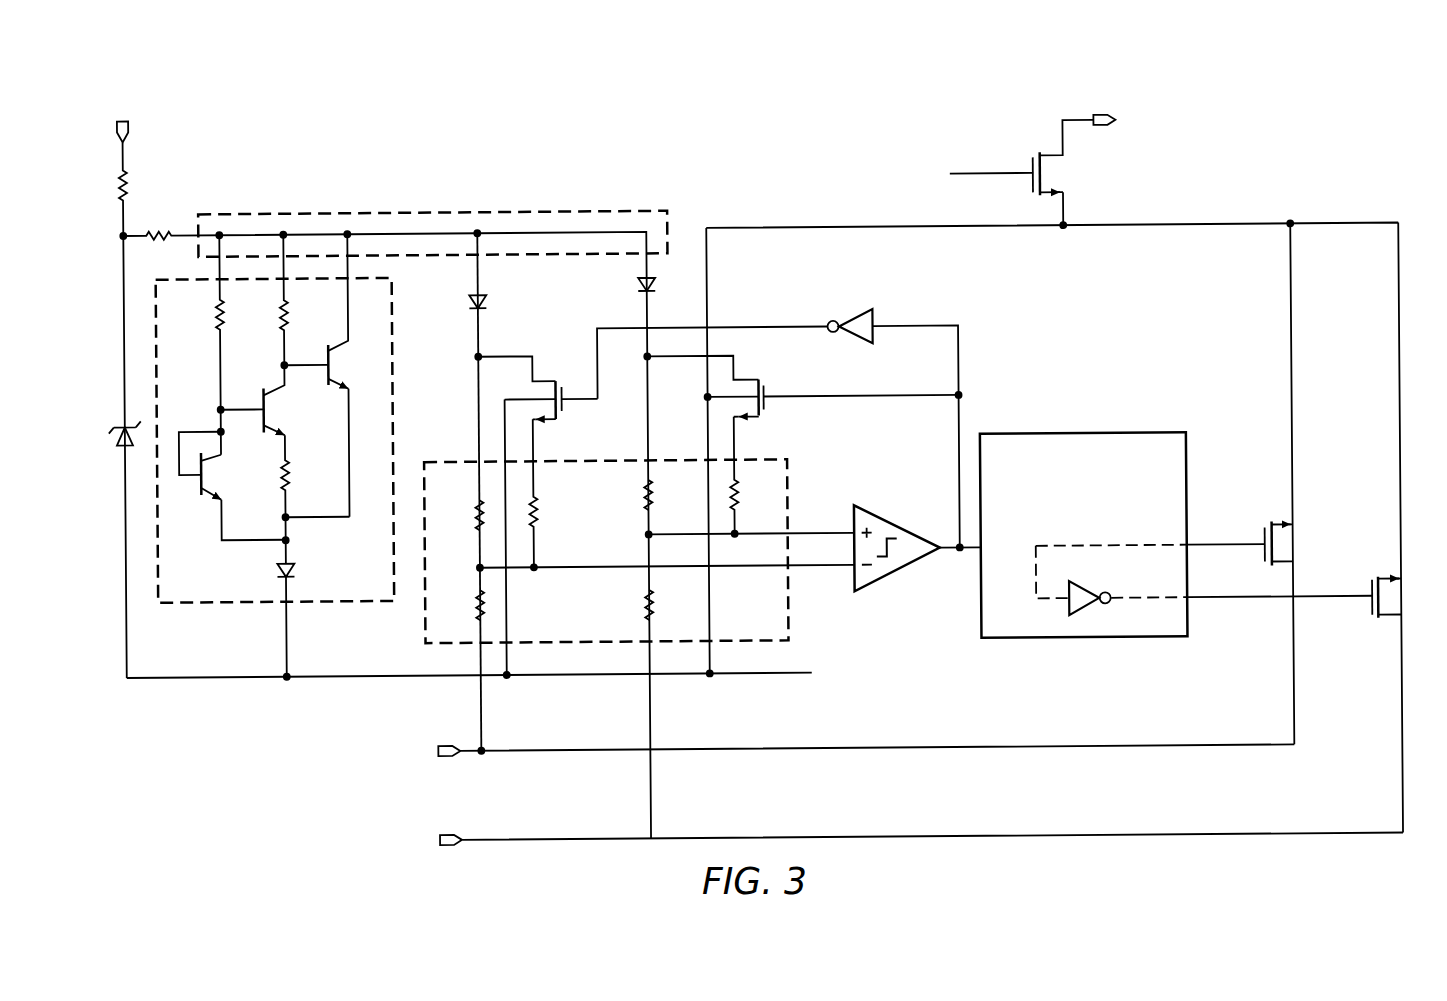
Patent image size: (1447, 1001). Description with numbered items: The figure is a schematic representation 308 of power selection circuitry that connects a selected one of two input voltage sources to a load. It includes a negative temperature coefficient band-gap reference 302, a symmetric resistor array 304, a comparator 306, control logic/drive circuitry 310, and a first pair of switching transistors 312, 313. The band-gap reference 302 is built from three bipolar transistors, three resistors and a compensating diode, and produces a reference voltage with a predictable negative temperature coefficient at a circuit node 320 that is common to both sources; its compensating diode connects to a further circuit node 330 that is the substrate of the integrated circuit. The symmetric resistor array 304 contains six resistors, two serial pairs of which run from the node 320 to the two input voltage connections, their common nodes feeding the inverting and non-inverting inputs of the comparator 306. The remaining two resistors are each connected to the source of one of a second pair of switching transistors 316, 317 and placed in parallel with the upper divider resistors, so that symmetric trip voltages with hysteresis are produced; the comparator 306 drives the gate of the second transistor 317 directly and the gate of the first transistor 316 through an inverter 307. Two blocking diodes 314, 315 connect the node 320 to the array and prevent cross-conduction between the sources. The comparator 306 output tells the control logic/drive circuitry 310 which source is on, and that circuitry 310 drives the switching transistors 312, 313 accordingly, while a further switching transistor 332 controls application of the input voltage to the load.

The power selection circuitry 308 is at (537, 128).
The circuit node 320 is at (382, 206).
The NTC band-gap reference 302 is at (230, 604).
The diode D1 314 is at (466, 303).
The diode D2 315 is at (636, 286).
The switching transistor M1 316 is at (564, 412).
The switching transistor M2 317 is at (766, 412).
The inverter 307 is at (853, 318).
The symmetric resistor array 304 is at (794, 602).
The comparator 306 is at (899, 573).
The control logic/drive circuitry 310 is at (1088, 434).
The switching transistor MA 312 is at (1262, 533).
The switching transistor MB 313 is at (1369, 613).
The switching transistor M3 332 is at (1033, 160).
The circuit node 330 is at (760, 675).